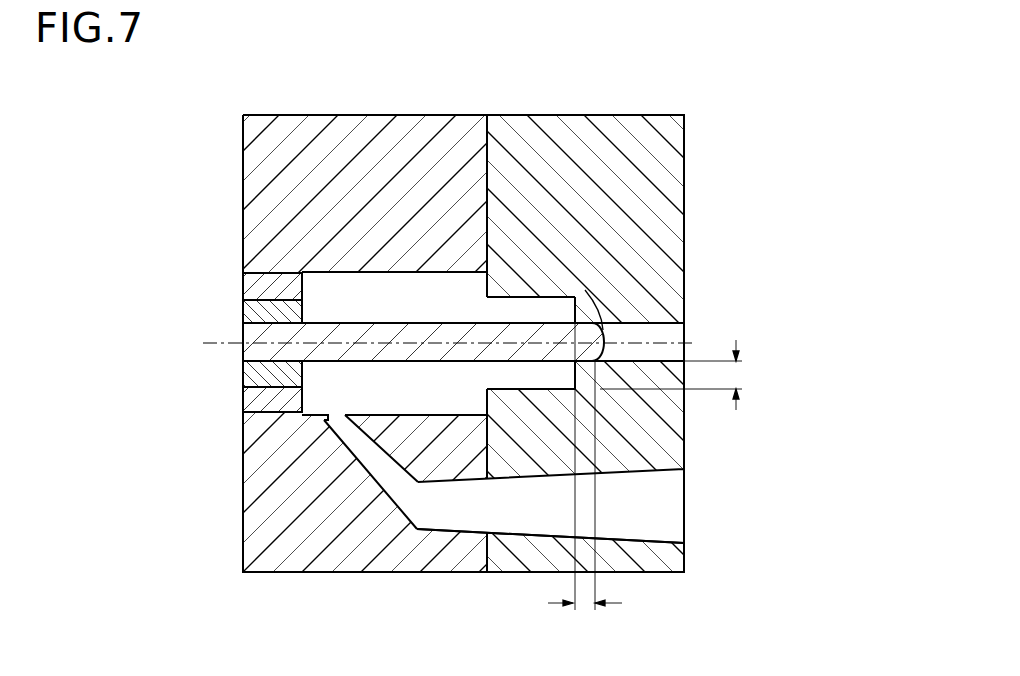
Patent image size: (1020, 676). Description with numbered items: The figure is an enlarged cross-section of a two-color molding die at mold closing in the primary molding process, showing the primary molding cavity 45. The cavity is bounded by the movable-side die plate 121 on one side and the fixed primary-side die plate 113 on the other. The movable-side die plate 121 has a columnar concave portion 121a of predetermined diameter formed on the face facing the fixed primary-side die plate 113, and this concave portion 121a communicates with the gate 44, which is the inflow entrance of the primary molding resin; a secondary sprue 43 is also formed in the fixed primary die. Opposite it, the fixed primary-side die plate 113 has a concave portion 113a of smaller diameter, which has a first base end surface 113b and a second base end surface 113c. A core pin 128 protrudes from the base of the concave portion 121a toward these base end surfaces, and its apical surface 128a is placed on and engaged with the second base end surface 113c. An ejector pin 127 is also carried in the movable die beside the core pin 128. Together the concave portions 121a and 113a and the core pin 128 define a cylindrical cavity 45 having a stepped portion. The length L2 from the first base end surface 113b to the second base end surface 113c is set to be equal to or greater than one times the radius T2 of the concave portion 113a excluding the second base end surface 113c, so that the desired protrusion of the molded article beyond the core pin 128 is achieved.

The movable-side die plate 121 is at (372, 122).
The concave portion (second concave portion) 121a is at (383, 282).
The ejector pin 127 is at (248, 288).
The core pin 128 is at (262, 350).
The apical surface of the core pin 128a is at (604, 338).
The primary molding cavity 45 is at (447, 290).
The fixed primary-side die plate 113 is at (597, 125).
The concave portion (first concave portion) 113a is at (531, 297).
The first base end surface 113b is at (555, 296).
The second base end surface 113c is at (577, 312).
The gate 44 is at (377, 478).
The secondary sprue 43 is at (493, 538).
The radius T2 is at (743, 377).
The length from first base end surface to second base end surface L2 is at (583, 607).